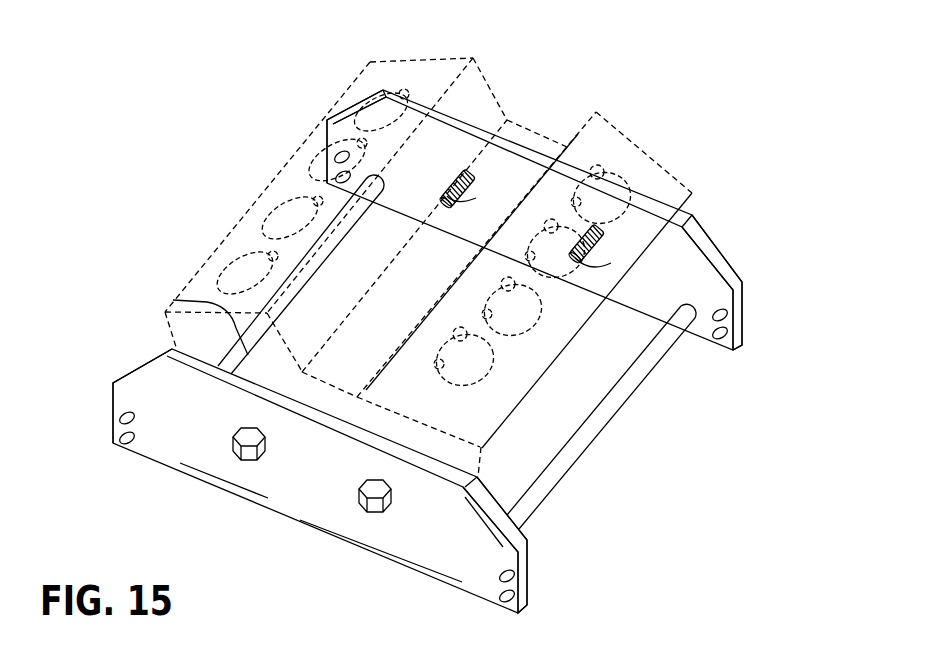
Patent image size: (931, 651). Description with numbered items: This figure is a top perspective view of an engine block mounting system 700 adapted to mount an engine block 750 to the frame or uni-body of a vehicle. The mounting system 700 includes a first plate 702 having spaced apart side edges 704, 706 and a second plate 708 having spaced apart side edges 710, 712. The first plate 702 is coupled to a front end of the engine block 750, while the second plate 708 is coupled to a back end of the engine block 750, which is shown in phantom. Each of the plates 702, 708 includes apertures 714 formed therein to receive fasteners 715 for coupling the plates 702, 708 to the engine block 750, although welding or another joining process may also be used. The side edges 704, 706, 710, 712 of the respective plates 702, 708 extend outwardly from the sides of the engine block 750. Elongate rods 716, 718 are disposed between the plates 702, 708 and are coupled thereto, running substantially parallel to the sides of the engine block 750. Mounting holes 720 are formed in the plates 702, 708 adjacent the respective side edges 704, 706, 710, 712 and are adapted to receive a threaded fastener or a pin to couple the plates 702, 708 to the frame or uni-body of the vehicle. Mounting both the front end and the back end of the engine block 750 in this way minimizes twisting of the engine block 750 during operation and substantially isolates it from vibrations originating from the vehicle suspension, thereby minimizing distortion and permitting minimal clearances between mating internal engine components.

The engine block mounting system 700 is at (713, 91).
The first plate 702 is at (703, 223).
The side edge 704 is at (326, 121).
The side edge 706 is at (743, 296).
The second plate 708 is at (428, 537).
The side edge 710 is at (113, 387).
The side edge 712 is at (528, 563).
The apertures 714 is at (467, 176).
The fasteners 715 is at (482, 200).
The elongate rod 716 is at (173, 300).
The elongate rod 718 is at (636, 398).
The mounting holes 720 is at (328, 142).
The engine block 750 is at (629, 112).